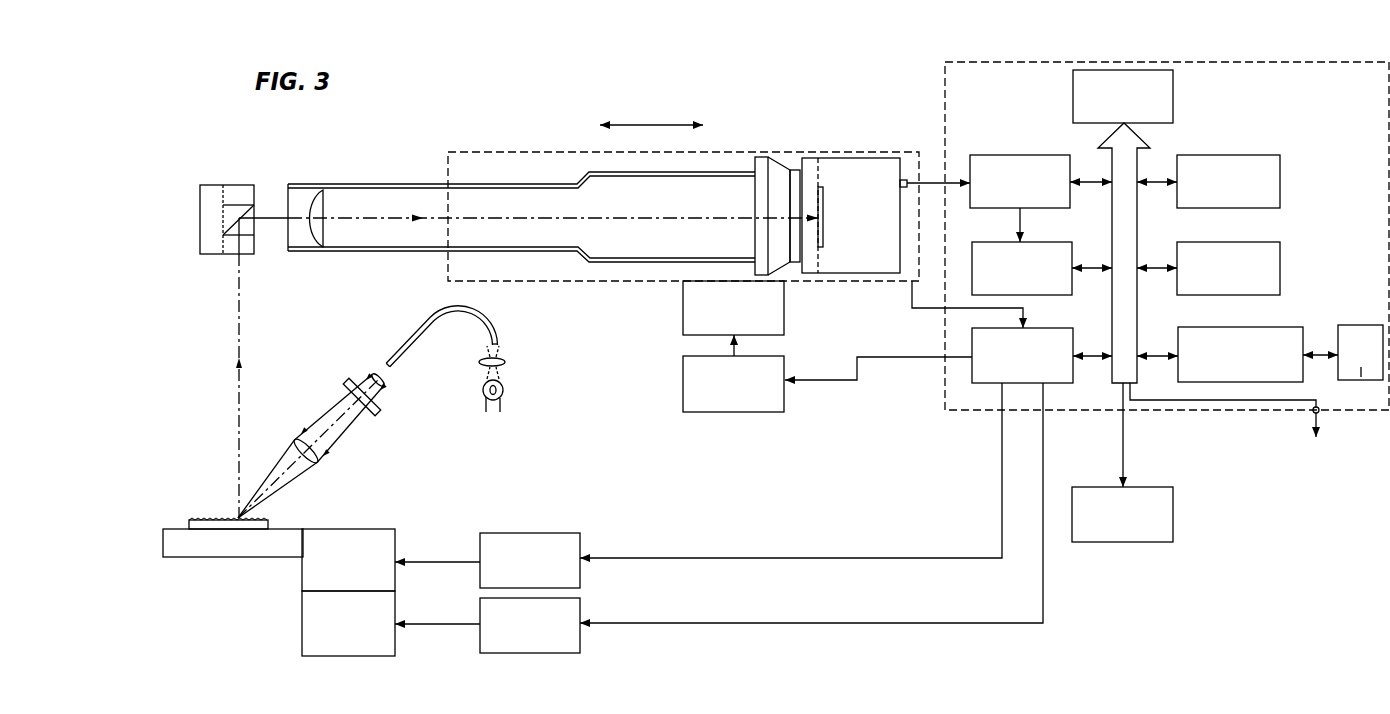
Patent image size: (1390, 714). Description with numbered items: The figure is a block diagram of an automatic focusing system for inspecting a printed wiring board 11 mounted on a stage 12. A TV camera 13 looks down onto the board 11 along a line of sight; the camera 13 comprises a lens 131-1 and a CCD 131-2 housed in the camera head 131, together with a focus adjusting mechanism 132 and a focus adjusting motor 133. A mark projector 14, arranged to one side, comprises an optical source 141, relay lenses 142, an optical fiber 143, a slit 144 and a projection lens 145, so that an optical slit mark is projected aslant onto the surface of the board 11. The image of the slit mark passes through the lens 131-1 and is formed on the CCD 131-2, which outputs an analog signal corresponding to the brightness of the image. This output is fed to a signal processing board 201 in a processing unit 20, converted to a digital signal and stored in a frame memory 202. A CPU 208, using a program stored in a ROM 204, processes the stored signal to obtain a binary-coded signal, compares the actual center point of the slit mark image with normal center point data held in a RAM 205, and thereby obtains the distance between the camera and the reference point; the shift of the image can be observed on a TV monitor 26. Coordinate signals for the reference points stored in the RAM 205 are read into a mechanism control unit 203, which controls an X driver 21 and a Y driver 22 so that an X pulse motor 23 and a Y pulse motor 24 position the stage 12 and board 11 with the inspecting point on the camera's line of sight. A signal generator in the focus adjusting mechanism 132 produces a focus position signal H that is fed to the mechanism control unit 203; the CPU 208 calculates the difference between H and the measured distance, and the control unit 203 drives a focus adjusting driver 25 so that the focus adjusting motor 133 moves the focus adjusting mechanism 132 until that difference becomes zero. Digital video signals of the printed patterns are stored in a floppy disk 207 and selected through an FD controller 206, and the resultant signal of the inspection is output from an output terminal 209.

The printed wiring board 11 is at (188, 523).
The stage 12 is at (197, 558).
The TV camera 13 is at (488, 138).
The camera head 131 is at (787, 152).
The lens 131-1 is at (320, 203).
The CCD 131-2 is at (823, 190).
The focus adjusting mechanism 132 is at (714, 152).
The focus adjusting motor 133 is at (785, 310).
The mark projector 14 is at (433, 393).
The optical source 141 is at (503, 393).
The relay lenses 142 is at (373, 377).
The optical fiber 143 is at (490, 320).
The slit 144 is at (385, 413).
The projection lens 145 is at (318, 462).
The processing unit 20 is at (1072, 62).
The signal processing board 201 is at (1028, 153).
The frame memory 202 is at (1038, 240).
The mechanism control unit 203 is at (1038, 327).
The ROM 204 is at (1243, 153).
The RAM 205 is at (1282, 270).
The FD controller 206 is at (1268, 325).
The floppy disk 207 is at (1355, 325).
The CPU 208 is at (1175, 97).
The output terminal 209 is at (1320, 412).
The X driver 21 is at (522, 532).
The Y driver 22 is at (538, 653).
The X pulse motor 23 is at (355, 528).
The Y pulse motor 24 is at (380, 657).
The focus adjusting driver 25 is at (763, 412).
The TV monitor 26 is at (1175, 513).
The focus position signal H is at (913, 296).